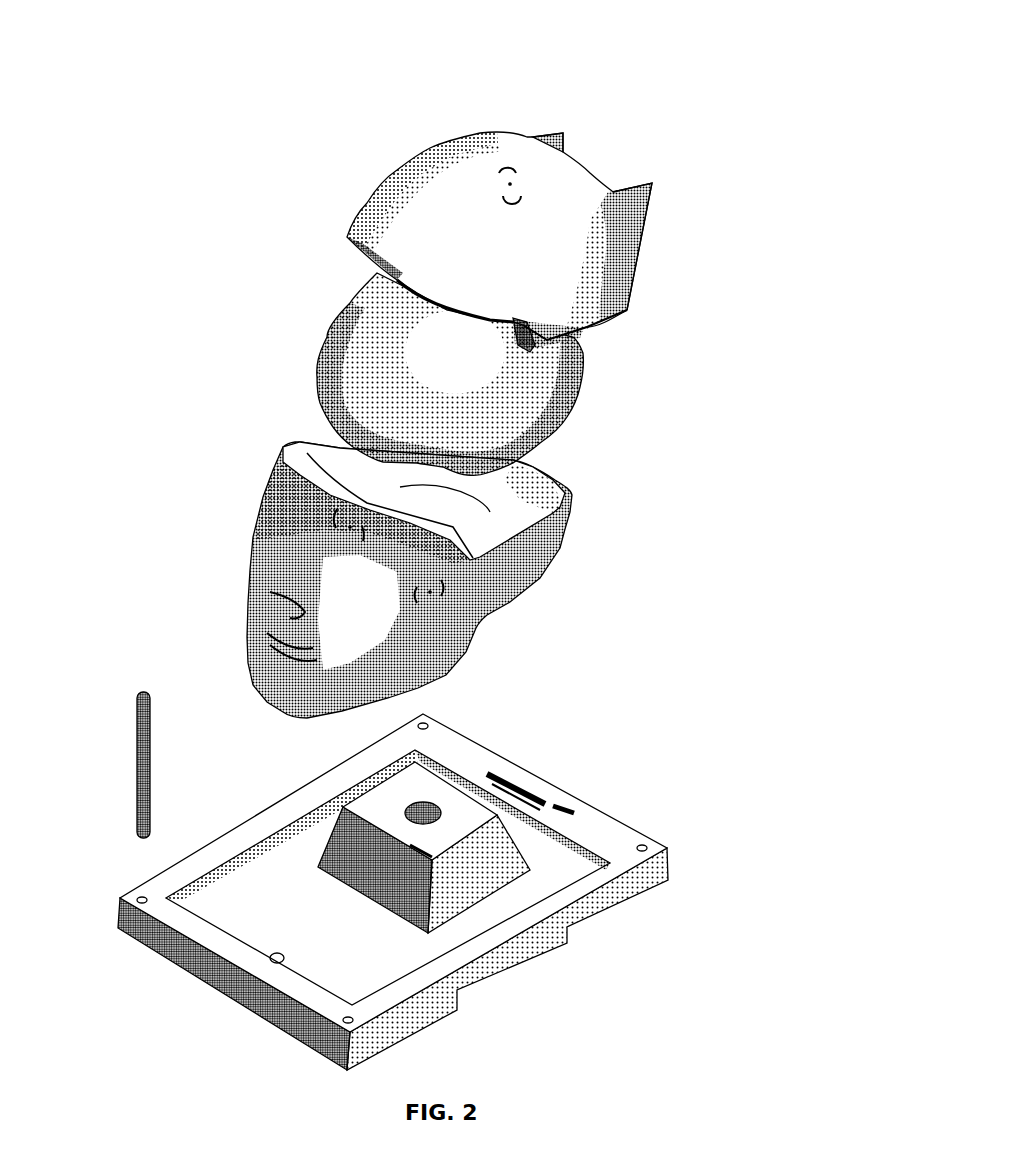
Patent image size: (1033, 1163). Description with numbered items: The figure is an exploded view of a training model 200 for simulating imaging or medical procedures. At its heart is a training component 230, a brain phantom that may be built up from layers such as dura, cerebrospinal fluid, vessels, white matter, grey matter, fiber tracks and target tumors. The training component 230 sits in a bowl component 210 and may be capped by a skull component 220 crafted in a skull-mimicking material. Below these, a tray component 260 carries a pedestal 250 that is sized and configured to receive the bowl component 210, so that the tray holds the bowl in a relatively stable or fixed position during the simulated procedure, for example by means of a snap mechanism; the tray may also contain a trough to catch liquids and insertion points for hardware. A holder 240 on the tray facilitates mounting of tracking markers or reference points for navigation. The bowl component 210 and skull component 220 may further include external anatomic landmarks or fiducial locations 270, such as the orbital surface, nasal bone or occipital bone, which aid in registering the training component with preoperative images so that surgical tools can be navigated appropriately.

The training model 200 is at (722, 137).
The bowl component 210 is at (540, 540).
The skull component 220 is at (407, 242).
The training component 230 is at (313, 367).
The holder 240 is at (132, 748).
The pedestal 250 is at (523, 777).
The tray component 260 is at (577, 833).
The fiducial locations 270 is at (495, 190).